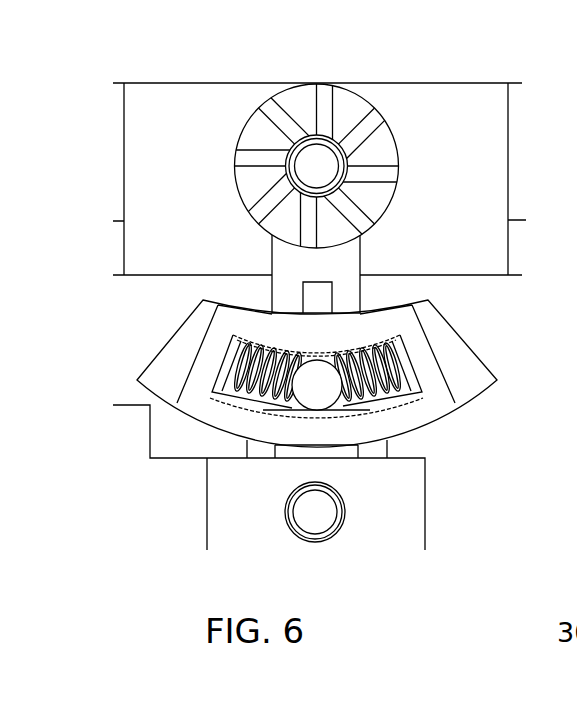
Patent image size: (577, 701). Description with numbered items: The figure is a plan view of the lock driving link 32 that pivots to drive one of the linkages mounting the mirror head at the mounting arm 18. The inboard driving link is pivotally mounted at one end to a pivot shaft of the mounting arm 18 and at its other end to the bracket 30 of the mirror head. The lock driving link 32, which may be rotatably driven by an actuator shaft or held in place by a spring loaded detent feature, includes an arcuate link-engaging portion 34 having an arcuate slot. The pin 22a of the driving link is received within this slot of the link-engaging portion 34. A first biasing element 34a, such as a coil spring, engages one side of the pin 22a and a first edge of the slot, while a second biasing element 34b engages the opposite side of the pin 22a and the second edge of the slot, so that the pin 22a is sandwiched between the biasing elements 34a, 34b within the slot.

The mounting arm 18 is at (197, 152).
The lock driving link 32 is at (435, 225).
The bracket 30 is at (135, 485).
The link-engaging portion 34 is at (435, 413).
The first biasing element 34a is at (263, 390).
The second biasing element 34b is at (365, 392).
The pin 22a is at (318, 388).